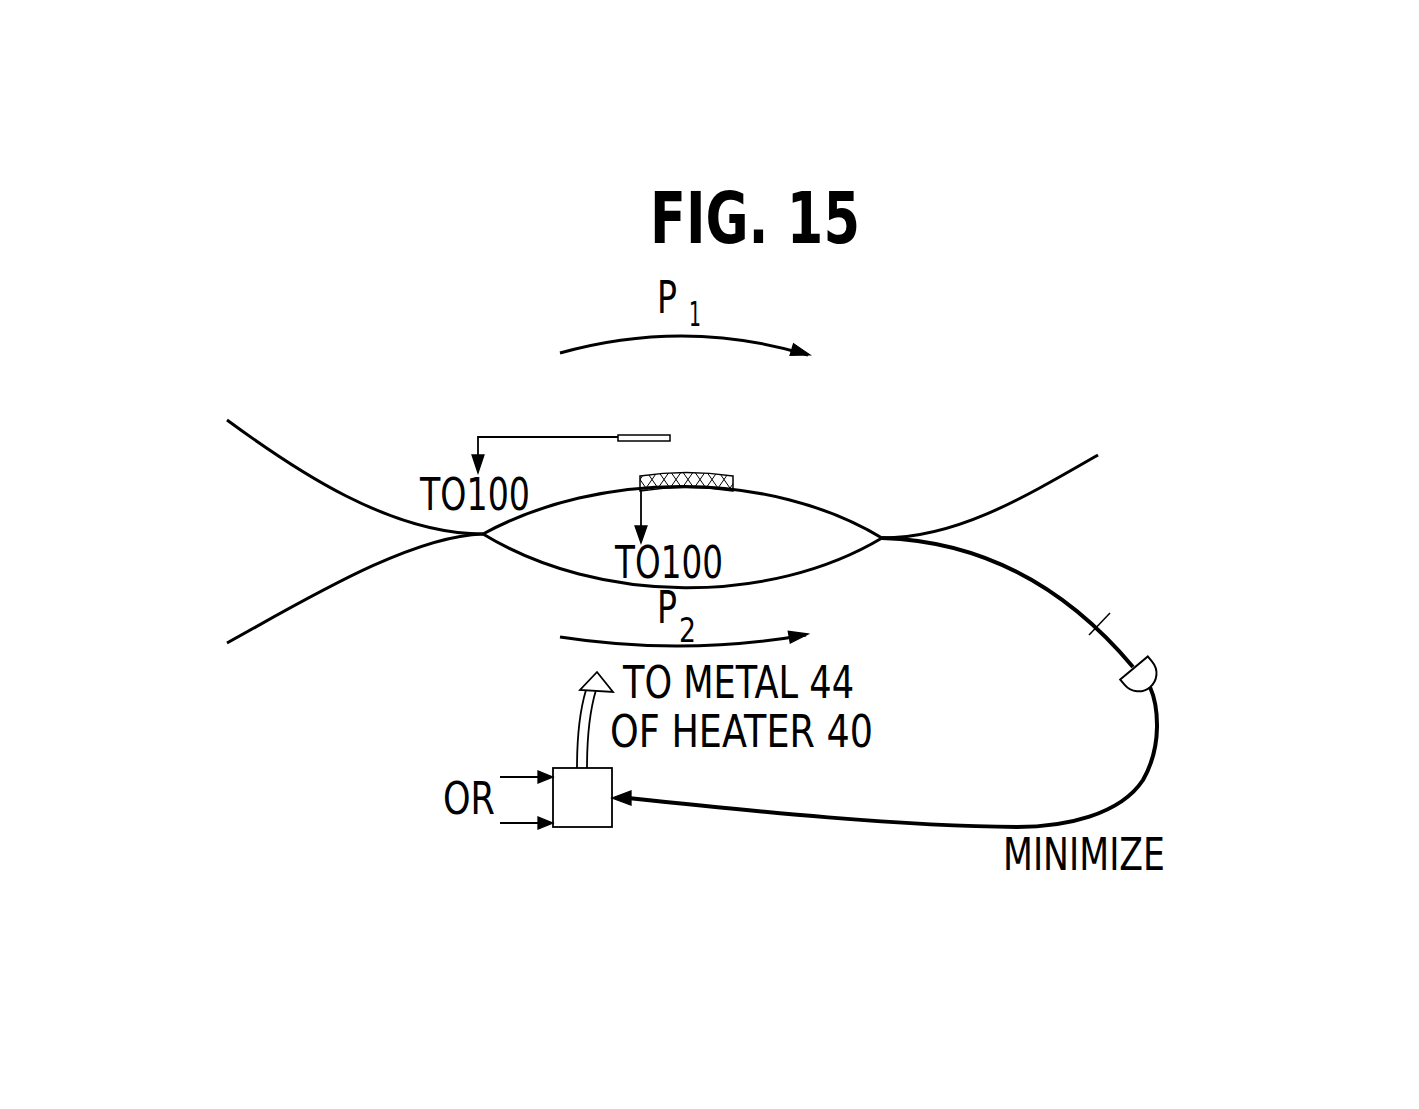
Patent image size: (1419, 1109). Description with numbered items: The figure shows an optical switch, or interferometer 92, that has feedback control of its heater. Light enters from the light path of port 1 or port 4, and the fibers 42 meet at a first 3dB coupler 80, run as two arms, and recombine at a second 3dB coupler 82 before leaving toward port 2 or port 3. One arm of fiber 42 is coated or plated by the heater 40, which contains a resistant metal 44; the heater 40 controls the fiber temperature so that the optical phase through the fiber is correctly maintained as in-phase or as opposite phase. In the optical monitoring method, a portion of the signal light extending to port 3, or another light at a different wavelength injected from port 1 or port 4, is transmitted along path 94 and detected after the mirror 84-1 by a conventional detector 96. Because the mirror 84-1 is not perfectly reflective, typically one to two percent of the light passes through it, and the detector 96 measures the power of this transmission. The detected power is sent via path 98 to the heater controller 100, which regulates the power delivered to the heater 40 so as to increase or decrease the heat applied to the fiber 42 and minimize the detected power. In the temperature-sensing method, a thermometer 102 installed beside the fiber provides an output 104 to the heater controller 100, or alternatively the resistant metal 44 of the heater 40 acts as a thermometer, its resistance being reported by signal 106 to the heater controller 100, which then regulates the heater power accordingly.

The port 1 is at (341, 602).
The port 2 is at (1005, 472).
The port 3 is at (1007, 609).
The port 4 is at (340, 461).
The heater 40 is at (692, 486).
The fiber 42 is at (353, 491).
The resistant metal 44 is at (690, 490).
The 3dB coupler 80 is at (484, 537).
The 3dB coupler 82 is at (884, 540).
The mirror 84-1 is at (1110, 613).
The interferometer (optical switch) 92 is at (435, 717).
The path 94 is at (1118, 642).
The detector 96 is at (1152, 693).
The path 98 is at (920, 822).
The heater controller 100 is at (607, 783).
The thermometer 102 is at (657, 434).
The output 104 is at (530, 584).
The signal 106 is at (545, 678).